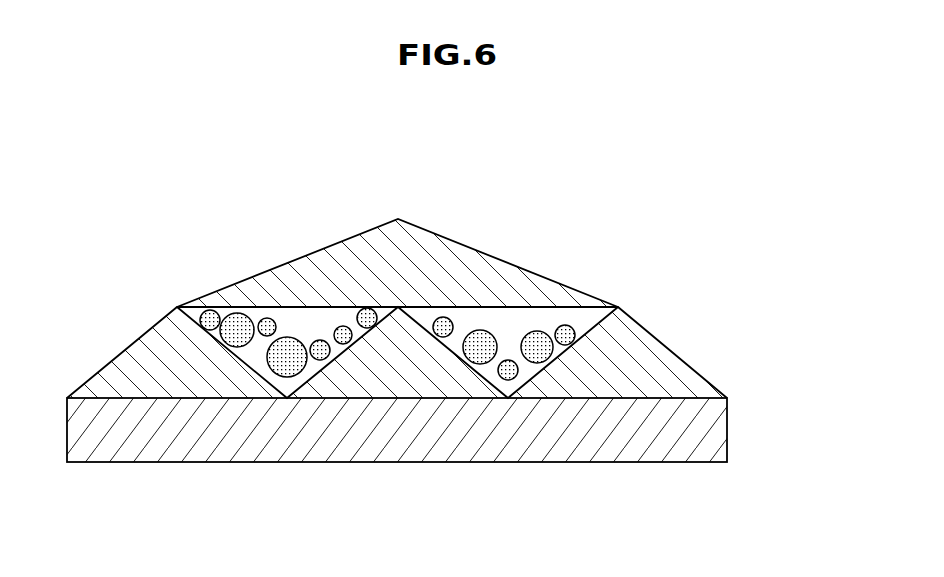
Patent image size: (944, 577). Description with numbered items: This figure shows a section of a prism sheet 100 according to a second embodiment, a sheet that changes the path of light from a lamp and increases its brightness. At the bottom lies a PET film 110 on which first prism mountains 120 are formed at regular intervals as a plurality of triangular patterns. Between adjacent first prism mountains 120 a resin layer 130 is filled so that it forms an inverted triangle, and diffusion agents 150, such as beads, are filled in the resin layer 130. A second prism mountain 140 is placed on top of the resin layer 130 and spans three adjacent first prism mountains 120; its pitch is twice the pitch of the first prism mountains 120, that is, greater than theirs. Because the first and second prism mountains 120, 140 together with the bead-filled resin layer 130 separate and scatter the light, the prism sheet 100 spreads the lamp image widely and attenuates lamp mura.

The prism sheet 100 is at (207, 210).
The PET film 110 is at (722, 429).
The first prism mountains 120 is at (660, 348).
The resin layer 130 is at (312, 363).
The second prism mountain 140 is at (377, 242).
The diffusion agents 150 is at (543, 340).